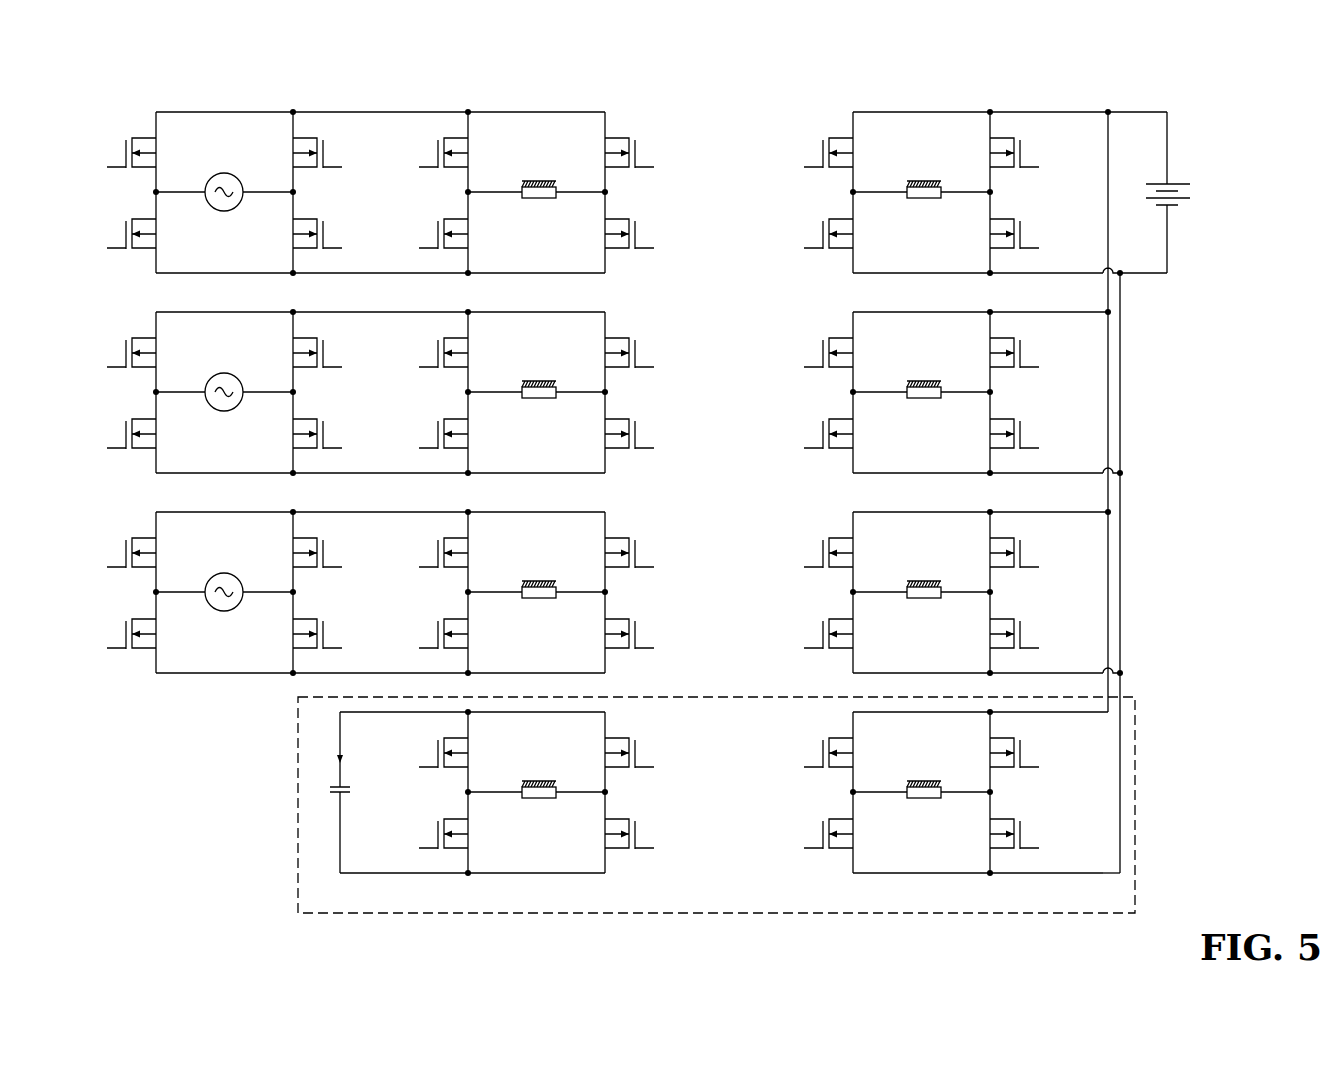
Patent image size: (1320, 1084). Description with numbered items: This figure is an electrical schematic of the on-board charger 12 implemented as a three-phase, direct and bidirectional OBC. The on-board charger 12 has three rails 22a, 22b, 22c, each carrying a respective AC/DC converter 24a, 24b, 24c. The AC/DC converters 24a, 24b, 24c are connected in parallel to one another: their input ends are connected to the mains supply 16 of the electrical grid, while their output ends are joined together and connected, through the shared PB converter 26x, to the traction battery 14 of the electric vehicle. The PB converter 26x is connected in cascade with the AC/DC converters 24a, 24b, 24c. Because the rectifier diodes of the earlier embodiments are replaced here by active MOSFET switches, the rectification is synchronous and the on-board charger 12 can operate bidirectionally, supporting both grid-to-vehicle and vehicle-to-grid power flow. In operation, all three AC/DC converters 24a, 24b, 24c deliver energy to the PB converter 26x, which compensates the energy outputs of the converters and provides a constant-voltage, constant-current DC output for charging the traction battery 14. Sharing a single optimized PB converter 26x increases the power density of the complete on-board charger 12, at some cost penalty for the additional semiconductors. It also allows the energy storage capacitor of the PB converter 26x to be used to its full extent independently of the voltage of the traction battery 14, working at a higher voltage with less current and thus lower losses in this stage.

The on-board charger 12 is at (1148, 82).
The traction battery 14 is at (1179, 174).
The mains supply 16 is at (224, 212).
The first rail 22a is at (214, 175).
The second rail 22b is at (145, 326).
The third rail 22c is at (145, 526).
The AC/DC converter 24a is at (616, 126).
The AC/DC converter 24b is at (616, 326).
The AC/DC converter 24c is at (616, 526).
The PB converter 26x is at (297, 823).